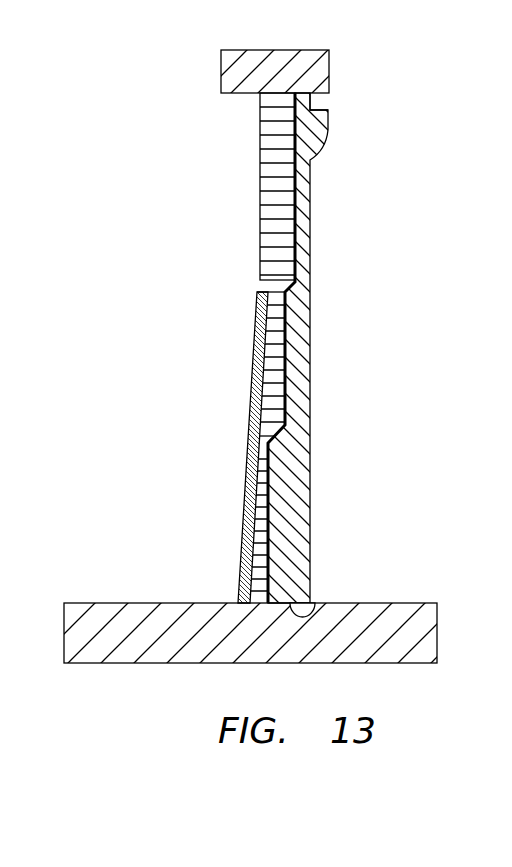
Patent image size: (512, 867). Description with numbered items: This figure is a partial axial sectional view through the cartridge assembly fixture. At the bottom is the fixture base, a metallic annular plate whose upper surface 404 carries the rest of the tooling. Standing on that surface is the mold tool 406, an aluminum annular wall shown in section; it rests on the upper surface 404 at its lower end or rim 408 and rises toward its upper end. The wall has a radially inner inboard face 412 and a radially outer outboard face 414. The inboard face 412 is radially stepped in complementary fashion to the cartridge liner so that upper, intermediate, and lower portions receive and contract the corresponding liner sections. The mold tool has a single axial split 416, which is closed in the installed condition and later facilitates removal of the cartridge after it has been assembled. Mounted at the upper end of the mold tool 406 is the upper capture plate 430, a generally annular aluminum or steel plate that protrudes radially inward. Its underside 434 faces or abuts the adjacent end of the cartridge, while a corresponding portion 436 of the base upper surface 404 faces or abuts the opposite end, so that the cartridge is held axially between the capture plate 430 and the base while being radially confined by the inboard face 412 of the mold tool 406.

The upper capture plate 430 is at (340, 52).
The underside 434 is at (228, 95).
The axial split 416 is at (328, 93).
The inboard face 412 is at (277, 193).
The outboard face 414 is at (355, 348).
The mold tool 406 is at (355, 348).
The portion of the surface 436 is at (240, 592).
The lower end/rim 408 is at (318, 603).
The upper surface/face 404 is at (385, 603).